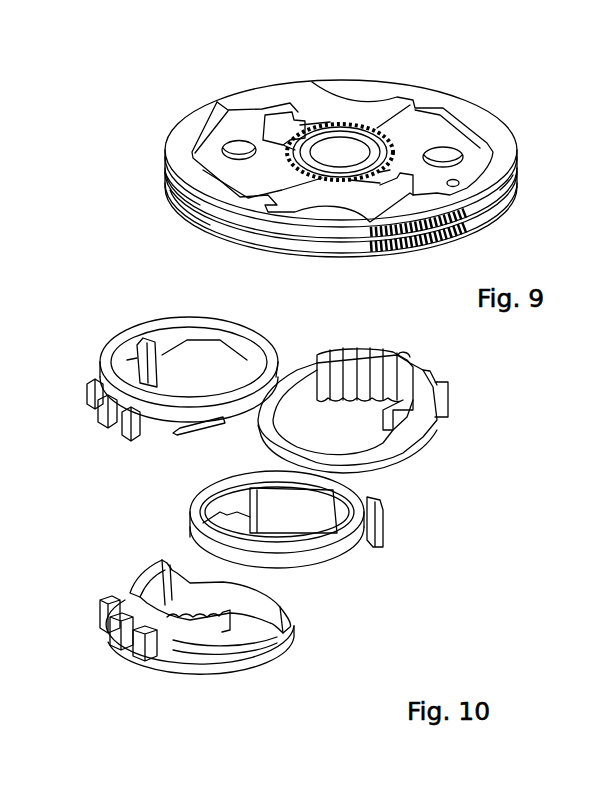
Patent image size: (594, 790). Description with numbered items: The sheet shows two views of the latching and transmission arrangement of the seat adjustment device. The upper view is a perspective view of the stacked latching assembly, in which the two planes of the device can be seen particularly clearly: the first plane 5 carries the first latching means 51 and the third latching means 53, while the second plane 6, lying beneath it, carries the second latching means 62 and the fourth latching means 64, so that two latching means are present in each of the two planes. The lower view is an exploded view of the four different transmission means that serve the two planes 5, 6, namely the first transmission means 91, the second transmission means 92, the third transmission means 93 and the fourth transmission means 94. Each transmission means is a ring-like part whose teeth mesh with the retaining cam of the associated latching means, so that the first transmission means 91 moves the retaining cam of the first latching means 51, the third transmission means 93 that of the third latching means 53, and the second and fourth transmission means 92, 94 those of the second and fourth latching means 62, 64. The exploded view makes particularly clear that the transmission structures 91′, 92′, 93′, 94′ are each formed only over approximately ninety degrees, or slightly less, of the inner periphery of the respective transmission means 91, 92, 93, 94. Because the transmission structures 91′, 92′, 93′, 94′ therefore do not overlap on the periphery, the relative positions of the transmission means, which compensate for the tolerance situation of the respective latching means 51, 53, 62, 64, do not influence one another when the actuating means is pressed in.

In FIG. 9, the first plane 5 is at (183, 113).
In FIG. 9, the first latching means 51 is at (489, 101).
In FIG. 9, the third latching means 53 is at (223, 92).
In FIG. 9, the second plane 6 is at (160, 210).
In FIG. 9, the second latching means 62 is at (493, 224).
In FIG. 9, the fourth latching means 64 is at (187, 233).
In FIG. 10, the first transmission means 91 is at (403, 447).
In FIG. 10, the transmission structure of the first transmission means 91′ is at (360, 406).
In FIG. 10, the second transmission means 92 is at (194, 508).
In FIG. 10, the transmission structure of the second transmission means 92′ is at (322, 522).
In FIG. 10, the third transmission means 93 is at (108, 352).
In FIG. 10, the transmission structure of the third transmission means 93′ is at (172, 377).
In FIG. 10, the fourth transmission means 94 is at (207, 663).
In FIG. 10, the transmission structure of the fourth transmission means 94′ is at (225, 605).